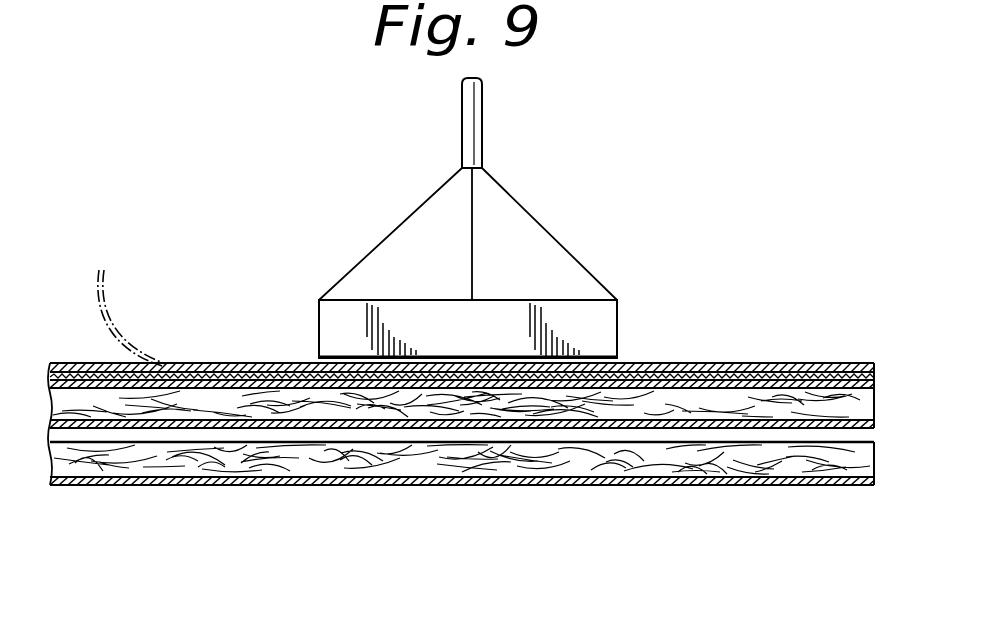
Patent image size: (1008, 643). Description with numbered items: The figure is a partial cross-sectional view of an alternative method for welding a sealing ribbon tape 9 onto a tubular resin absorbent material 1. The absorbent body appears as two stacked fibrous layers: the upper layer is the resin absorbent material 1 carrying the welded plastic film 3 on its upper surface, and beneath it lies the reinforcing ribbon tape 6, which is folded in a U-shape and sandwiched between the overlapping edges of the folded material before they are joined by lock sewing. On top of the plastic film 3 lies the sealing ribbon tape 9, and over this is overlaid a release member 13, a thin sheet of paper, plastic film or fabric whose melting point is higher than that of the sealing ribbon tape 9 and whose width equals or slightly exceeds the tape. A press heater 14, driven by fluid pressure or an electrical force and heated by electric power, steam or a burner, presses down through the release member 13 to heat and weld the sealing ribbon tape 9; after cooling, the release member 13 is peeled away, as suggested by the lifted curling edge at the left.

The press heater 14 is at (620, 337).
The release member 13 is at (842, 364).
The sealing ribbon tape 9 is at (874, 377).
The plastic film 3 is at (874, 385).
The resin absorbent material 1 is at (873, 413).
The reinforcing ribbon tape 6 is at (863, 428).